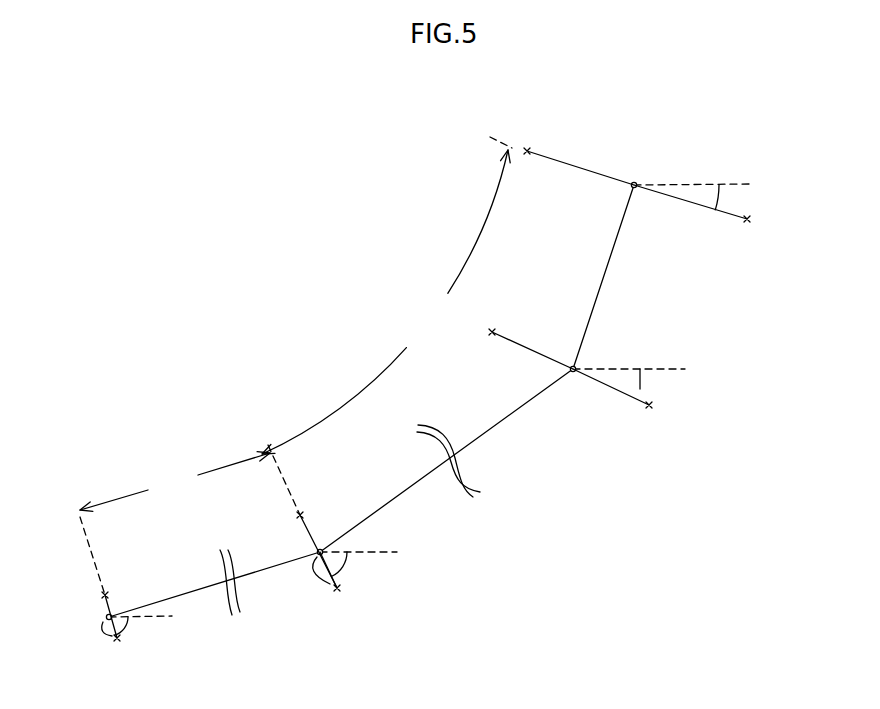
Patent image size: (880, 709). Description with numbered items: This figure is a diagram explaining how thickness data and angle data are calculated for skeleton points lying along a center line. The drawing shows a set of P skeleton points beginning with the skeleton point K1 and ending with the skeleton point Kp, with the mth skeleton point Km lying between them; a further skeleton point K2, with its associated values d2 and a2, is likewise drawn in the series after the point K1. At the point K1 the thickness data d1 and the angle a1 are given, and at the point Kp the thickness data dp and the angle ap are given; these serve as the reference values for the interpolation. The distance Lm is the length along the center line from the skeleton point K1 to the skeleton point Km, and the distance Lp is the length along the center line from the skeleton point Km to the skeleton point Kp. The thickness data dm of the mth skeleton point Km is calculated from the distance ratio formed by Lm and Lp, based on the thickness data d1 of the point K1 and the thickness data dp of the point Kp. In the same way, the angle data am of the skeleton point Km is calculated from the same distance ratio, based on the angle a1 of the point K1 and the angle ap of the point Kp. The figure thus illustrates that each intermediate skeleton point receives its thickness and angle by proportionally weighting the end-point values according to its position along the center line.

The skeleton point K1 is at (634, 183).
The thickness data d1 is at (735, 222).
The angle a1 is at (720, 205).
The second knot point K2 is at (571, 366).
The tangent distance at K2 d2 is at (640, 408).
The tangent angle at K2 a2 is at (640, 389).
The distance along center line Lm is at (386, 302).
The distance along center line Lp is at (175, 482).
The mth skeleton point Km is at (318, 552).
The angle data am is at (343, 567).
The thickness data dm is at (323, 577).
The skeleton point Kp is at (105, 616).
The thickness data dp is at (105, 628).
The angle ap is at (127, 622).